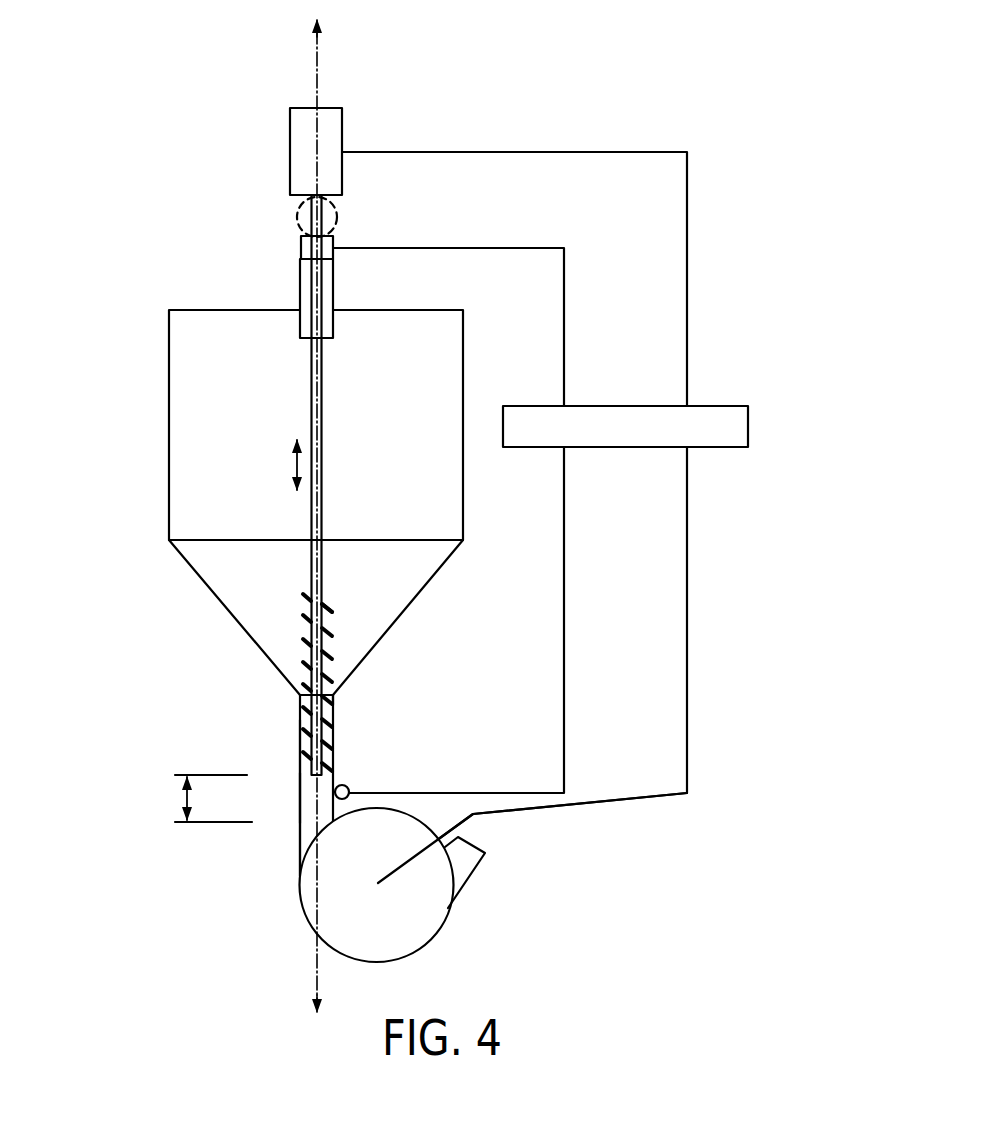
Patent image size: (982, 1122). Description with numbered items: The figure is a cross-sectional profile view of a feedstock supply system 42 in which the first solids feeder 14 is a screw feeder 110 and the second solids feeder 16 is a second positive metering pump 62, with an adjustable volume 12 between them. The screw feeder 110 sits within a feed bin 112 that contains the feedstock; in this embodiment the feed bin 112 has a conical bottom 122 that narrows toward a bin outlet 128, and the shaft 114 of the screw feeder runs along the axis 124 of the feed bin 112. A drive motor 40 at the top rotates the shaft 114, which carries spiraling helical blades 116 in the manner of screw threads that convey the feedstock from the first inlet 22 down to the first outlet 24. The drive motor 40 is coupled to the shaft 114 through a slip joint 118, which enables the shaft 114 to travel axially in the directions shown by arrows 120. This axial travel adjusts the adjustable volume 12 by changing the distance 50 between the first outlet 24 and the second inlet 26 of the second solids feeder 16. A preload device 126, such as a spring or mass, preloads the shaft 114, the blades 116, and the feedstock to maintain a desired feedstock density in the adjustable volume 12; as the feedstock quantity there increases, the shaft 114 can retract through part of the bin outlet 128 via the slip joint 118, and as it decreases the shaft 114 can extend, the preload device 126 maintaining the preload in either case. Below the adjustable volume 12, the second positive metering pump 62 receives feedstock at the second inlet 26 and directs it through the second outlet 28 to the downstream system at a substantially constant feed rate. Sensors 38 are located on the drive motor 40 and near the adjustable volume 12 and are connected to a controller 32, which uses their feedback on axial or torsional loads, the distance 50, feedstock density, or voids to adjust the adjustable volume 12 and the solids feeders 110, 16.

The adjustable volume 12 is at (280, 773).
The first solids feeder 14 is at (283, 595).
The second solids feeder 16 is at (433, 938).
The first inlet 22 is at (350, 688).
The first outlet 24 is at (268, 762).
The second inlet 26 is at (300, 840).
The second outlet 28 is at (467, 878).
The controller 32 is at (750, 425).
The sensor 38 is at (333, 237).
The drive motor 40 is at (328, 108).
The feedstock supply system 42 is at (98, 330).
The distance 50 is at (183, 807).
The second positive metering pump 62 is at (423, 888).
The screw feeder 110 is at (273, 687).
The feed bin 112 is at (168, 425).
The shaft 114 is at (322, 427).
The helical blades 116 is at (327, 657).
The slip joint 118 is at (298, 217).
The arrows 120 is at (297, 463).
The conical bottom 122 is at (400, 623).
The axis 124 is at (315, 72).
The preload device 126 is at (300, 285).
The bin outlet 128 is at (333, 700).